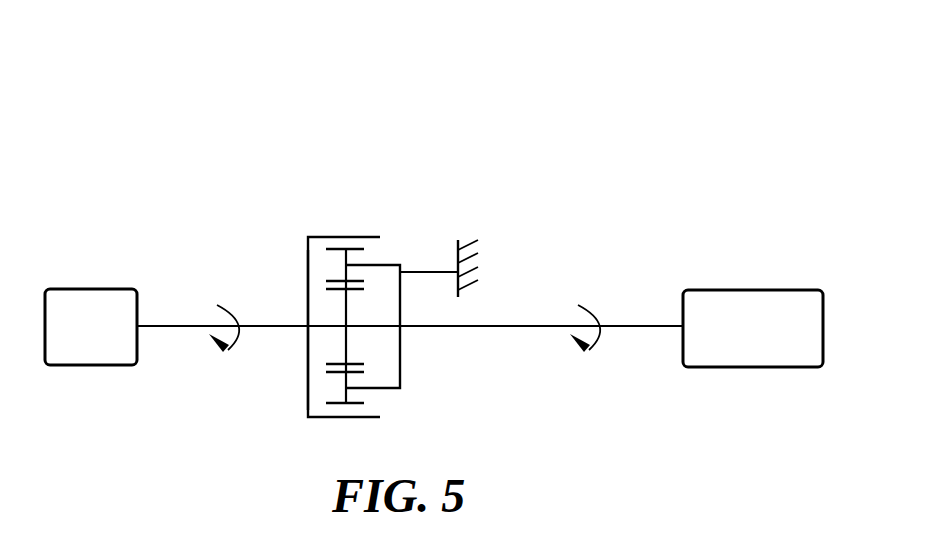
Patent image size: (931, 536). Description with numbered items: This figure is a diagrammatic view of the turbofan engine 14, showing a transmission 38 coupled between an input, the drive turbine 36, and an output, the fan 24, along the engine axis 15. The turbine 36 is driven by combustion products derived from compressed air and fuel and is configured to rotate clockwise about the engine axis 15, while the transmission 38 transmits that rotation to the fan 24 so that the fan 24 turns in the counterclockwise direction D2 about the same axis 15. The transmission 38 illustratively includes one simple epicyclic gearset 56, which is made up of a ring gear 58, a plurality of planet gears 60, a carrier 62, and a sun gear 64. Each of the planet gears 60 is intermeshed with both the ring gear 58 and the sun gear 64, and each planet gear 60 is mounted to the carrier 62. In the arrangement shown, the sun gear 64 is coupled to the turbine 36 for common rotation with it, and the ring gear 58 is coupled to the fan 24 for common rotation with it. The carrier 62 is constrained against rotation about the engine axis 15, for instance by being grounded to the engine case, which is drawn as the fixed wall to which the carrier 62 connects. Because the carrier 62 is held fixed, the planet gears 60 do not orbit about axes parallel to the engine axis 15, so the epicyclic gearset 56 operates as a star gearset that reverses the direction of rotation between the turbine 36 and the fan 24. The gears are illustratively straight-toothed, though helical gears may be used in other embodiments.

The turbofan engine 14 is at (455, 145).
The engine axis 15 is at (630, 326).
The fan 24 is at (88, 281).
The drive turbine 36 is at (752, 282).
The transmission 38 is at (305, 222).
The epicyclic gearset 56 is at (297, 280).
The ring gear 58 is at (350, 224).
The planet gears 60 is at (363, 301).
The carrier 62 is at (391, 254).
The sun gear 64 is at (319, 327).
The counterclockwise direction D2 is at (231, 357).